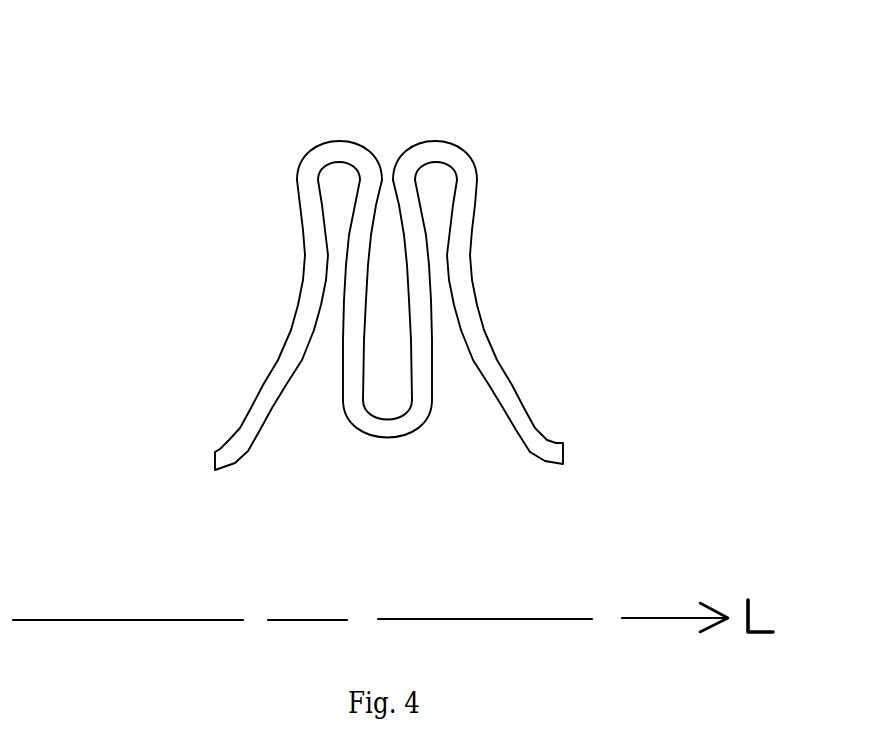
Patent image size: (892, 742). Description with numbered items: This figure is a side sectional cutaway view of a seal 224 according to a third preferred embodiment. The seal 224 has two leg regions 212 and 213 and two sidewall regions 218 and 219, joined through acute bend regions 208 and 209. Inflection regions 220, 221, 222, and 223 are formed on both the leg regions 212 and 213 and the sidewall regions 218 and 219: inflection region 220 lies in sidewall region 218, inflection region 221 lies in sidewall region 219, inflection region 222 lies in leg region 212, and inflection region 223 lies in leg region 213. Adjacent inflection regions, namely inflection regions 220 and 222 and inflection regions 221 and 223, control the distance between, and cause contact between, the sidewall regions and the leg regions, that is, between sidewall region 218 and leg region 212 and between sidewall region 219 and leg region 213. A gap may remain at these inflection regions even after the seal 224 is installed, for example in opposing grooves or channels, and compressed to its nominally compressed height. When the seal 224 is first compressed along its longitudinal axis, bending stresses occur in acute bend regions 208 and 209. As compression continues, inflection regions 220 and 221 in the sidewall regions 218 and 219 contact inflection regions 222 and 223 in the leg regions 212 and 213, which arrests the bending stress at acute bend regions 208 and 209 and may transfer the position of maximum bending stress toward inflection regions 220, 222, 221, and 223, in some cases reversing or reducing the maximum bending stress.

The acute bend region 208 is at (446, 143).
The acute bend region 209 is at (347, 145).
The leg region 212 is at (502, 378).
The leg region 213 is at (277, 373).
The sidewall region 218 is at (422, 270).
The sidewall region 219 is at (358, 243).
The inflection region 220 is at (463, 290).
The inflection region 221 is at (310, 290).
The inflection region 222 is at (425, 300).
The inflection region 223 is at (352, 305).
The seal 224 is at (549, 118).